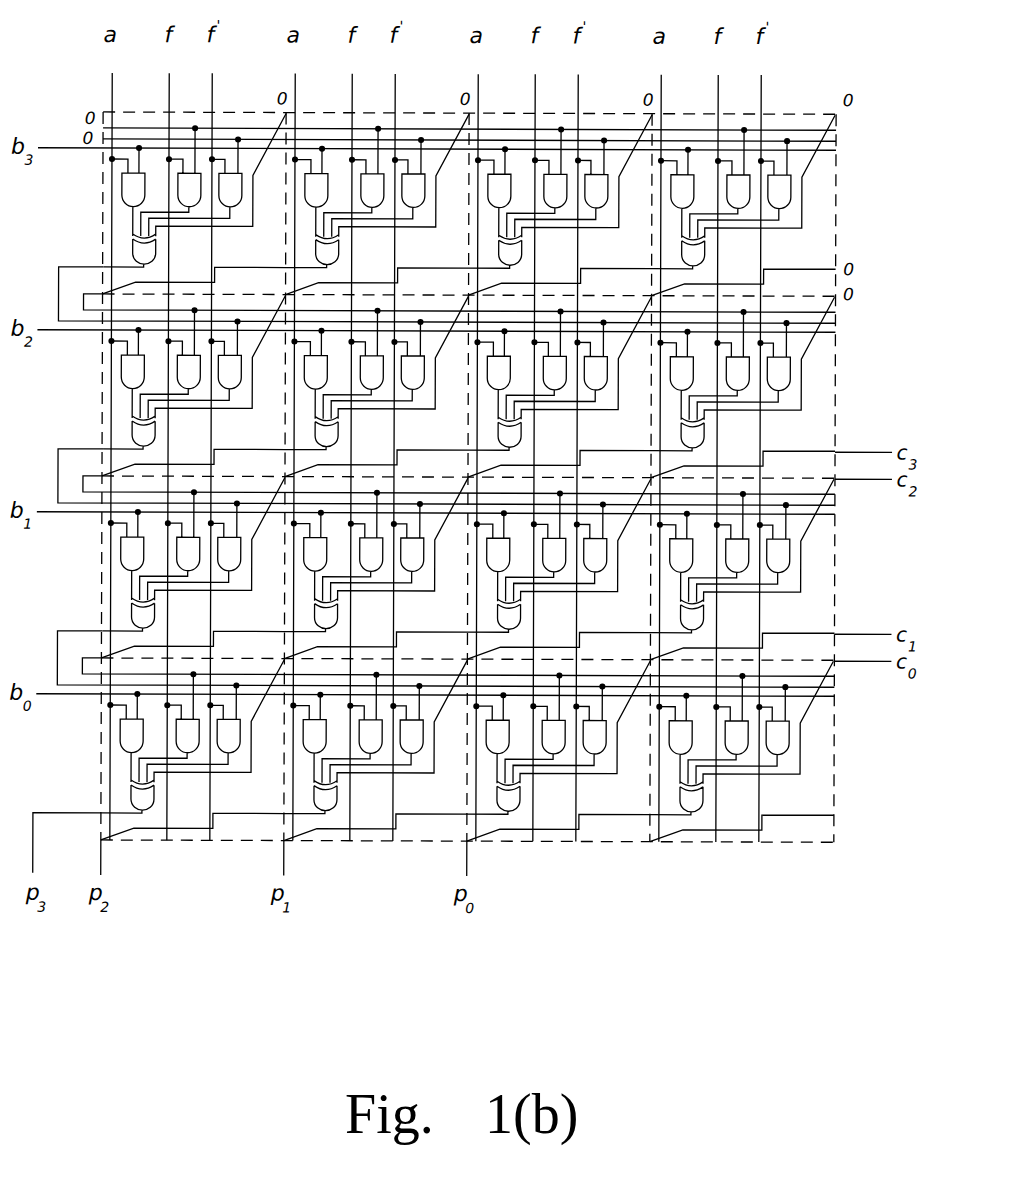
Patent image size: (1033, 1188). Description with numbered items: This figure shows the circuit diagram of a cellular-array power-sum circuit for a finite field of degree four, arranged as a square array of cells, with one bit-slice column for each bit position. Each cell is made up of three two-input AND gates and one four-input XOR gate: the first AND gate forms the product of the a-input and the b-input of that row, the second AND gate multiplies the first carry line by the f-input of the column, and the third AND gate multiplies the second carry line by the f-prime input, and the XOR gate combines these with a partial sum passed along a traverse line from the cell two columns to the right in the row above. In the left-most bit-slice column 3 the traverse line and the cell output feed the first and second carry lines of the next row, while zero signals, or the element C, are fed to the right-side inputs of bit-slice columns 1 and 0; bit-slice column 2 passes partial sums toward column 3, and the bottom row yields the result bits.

The bit-slice column 3 (a3, f3, f3' cells) 3 is at (194, 441).
The bit-slice column 2 (a2, f2, f2' cells) 2 is at (285, 441).
The bit-slice column 1 (a1, f1, f1' cells) 1 is at (468, 442).
The bit-slice column 0 (a0, f0, f0' cells) 0 is at (651, 442).